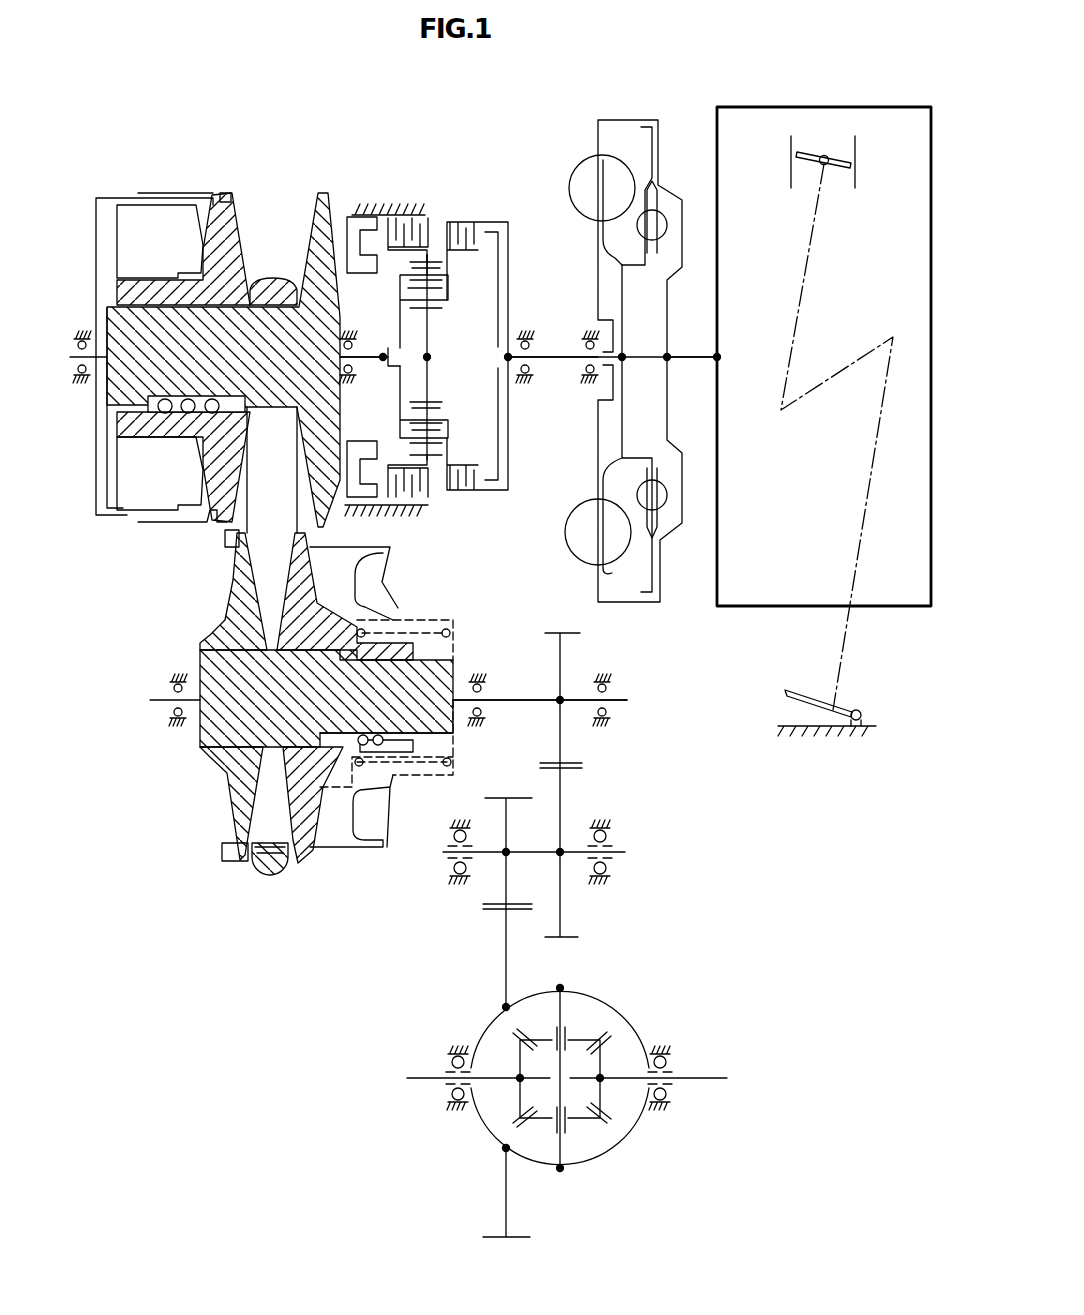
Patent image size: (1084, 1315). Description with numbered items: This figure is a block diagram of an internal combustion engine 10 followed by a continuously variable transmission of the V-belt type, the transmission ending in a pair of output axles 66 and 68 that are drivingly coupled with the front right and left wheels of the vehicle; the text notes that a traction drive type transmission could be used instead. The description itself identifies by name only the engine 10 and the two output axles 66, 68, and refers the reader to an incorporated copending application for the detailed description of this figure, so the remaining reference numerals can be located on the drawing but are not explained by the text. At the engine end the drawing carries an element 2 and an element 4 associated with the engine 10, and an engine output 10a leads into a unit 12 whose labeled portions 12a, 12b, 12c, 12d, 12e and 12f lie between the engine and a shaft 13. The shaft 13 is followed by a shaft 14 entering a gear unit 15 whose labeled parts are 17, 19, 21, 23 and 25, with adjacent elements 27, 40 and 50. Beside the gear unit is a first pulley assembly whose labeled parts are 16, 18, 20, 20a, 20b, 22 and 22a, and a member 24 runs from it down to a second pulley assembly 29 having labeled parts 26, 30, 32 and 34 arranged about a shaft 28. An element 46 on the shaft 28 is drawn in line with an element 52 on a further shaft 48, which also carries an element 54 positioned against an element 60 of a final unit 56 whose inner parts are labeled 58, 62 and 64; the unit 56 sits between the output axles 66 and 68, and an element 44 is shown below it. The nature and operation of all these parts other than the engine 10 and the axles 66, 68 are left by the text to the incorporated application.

The accelerator pedal 2 is at (850, 708).
The throttle valve 4 is at (822, 150).
The internal combustion engine 10 is at (790, 106).
The engine output shaft 10a is at (688, 359).
The torque converter 12 is at (632, 108).
The pump impeller 12a is at (655, 430).
The turbine runner 12b is at (573, 523).
The turbine 12c is at (603, 520).
The stator 12d is at (655, 163).
The lock-up clutch 12e is at (660, 133).
The converter cover 12f is at (650, 602).
The turbine shaft 13 is at (556, 362).
The input shaft 14 is at (370, 360).
The forward-reverse switching planetary gear set 15 is at (398, 200).
The primary pulley fixed flange 16 is at (319, 186).
The carrier 17 is at (462, 297).
The primary pulley 18 is at (333, 218).
The pinion 19 is at (430, 387).
The primary hydraulic cylinder 20 is at (133, 218).
The cylinder housing 20a is at (108, 502).
The cylinder cover 20b is at (216, 203).
The planet gear 21 is at (437, 410).
The primary pulley movable flange 22 is at (236, 200).
The piston portion 22a is at (240, 228).
The sun gear 23 is at (438, 447).
The V-belt 24 is at (233, 524).
The ring gear 25 is at (400, 400).
The belt cross section 26 is at (258, 882).
The reverse brake 27 is at (430, 458).
The secondary shaft 28 is at (525, 704).
The secondary pulley 29 is at (208, 628).
The secondary pulley movable flange 30 is at (238, 803).
The secondary hydraulic cylinder 32 is at (337, 833).
The secondary pulley fixed flange 34 is at (297, 860).
The forward clutch 40 is at (478, 214).
The drive shaft 44 is at (520, 1240).
The output gear 46 is at (548, 631).
The intermediate shaft 48 is at (563, 902).
The reverse brake 50 is at (428, 224).
The intermediate gear 52 is at (577, 850).
The reduction gear 54 is at (503, 880).
The differential 56 is at (634, 1008).
The differential pinion 58 is at (582, 1118).
The final ring gear 60 is at (547, 1042).
The side gear 62 is at (520, 1104).
The side gear 64 is at (605, 1057).
The output axle 66 is at (413, 1082).
The output axle 68 is at (706, 1082).